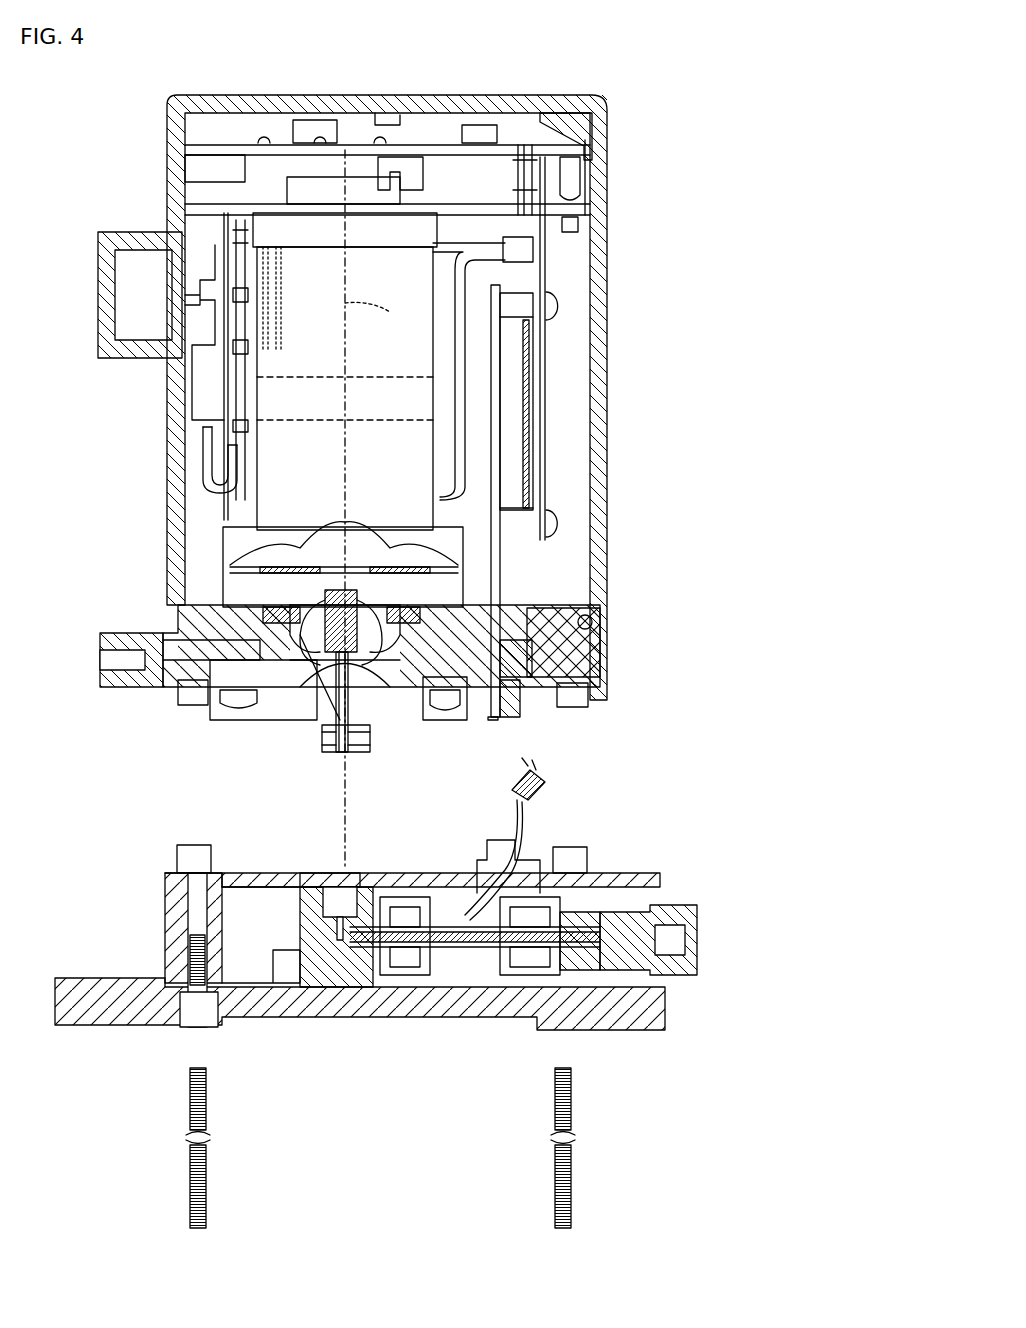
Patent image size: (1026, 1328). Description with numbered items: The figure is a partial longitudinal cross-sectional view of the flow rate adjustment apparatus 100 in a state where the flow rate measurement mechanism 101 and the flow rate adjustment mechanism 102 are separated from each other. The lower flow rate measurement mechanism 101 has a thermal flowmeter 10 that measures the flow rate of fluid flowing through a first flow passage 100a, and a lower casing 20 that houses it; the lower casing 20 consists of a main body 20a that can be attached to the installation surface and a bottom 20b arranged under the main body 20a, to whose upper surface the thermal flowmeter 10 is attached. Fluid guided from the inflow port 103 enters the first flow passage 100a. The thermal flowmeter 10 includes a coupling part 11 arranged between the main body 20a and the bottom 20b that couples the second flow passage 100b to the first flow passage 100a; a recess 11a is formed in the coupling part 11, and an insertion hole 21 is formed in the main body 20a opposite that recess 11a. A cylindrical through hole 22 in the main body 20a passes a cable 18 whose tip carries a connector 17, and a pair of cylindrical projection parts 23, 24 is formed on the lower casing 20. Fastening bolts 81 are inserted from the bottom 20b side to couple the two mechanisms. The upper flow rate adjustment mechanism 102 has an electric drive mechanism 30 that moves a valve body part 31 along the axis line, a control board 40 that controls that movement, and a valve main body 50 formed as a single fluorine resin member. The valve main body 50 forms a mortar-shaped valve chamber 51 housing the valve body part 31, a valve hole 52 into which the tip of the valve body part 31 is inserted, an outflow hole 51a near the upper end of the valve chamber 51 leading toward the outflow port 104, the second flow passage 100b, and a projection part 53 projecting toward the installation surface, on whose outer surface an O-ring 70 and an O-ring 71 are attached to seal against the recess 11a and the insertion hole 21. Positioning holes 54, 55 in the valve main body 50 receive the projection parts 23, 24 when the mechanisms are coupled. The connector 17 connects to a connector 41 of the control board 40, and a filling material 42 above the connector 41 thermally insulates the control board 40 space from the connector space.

The flow rate adjustment apparatus 100 is at (671, 83).
The flow rate adjustment mechanism 102 is at (396, 461).
The flow rate measurement mechanism 101 is at (415, 979).
The outflow port 104 is at (102, 660).
The inflow port 103 is at (680, 925).
The first flow passage 100a is at (612, 925).
The second flow passage 100b is at (345, 760).
The electric drive mechanism 30 is at (225, 503).
The valve body part 31 is at (295, 612).
The control board 40 is at (560, 405).
The connector 41 is at (495, 712).
The filling material 42 is at (515, 650).
The valve main body 50 is at (605, 655).
The valve chamber 51 is at (380, 565).
The outflow hole 51a is at (300, 690).
The valve hole 52 is at (372, 650).
The projection part 53 is at (320, 745).
The positioning hole 54 is at (193, 705).
The positioning hole 55 is at (573, 707).
The O-ring 70 is at (360, 738).
The O-ring 71 is at (380, 715).
The thermal flowmeter 10 is at (462, 965).
The coupling part 11 is at (335, 990).
The recess 11a is at (315, 908).
The connector 17 is at (530, 775).
The cable 18 is at (520, 818).
The lower casing 20 is at (425, 1082).
The main body 20a is at (180, 1022).
The bottom 20b is at (380, 1020).
The insertion hole 21 is at (318, 872).
The through hole 22 is at (500, 855).
The projection part 23 is at (176, 857).
The projection part 24 is at (572, 847).
The fastening bolt 81 is at (190, 1112).